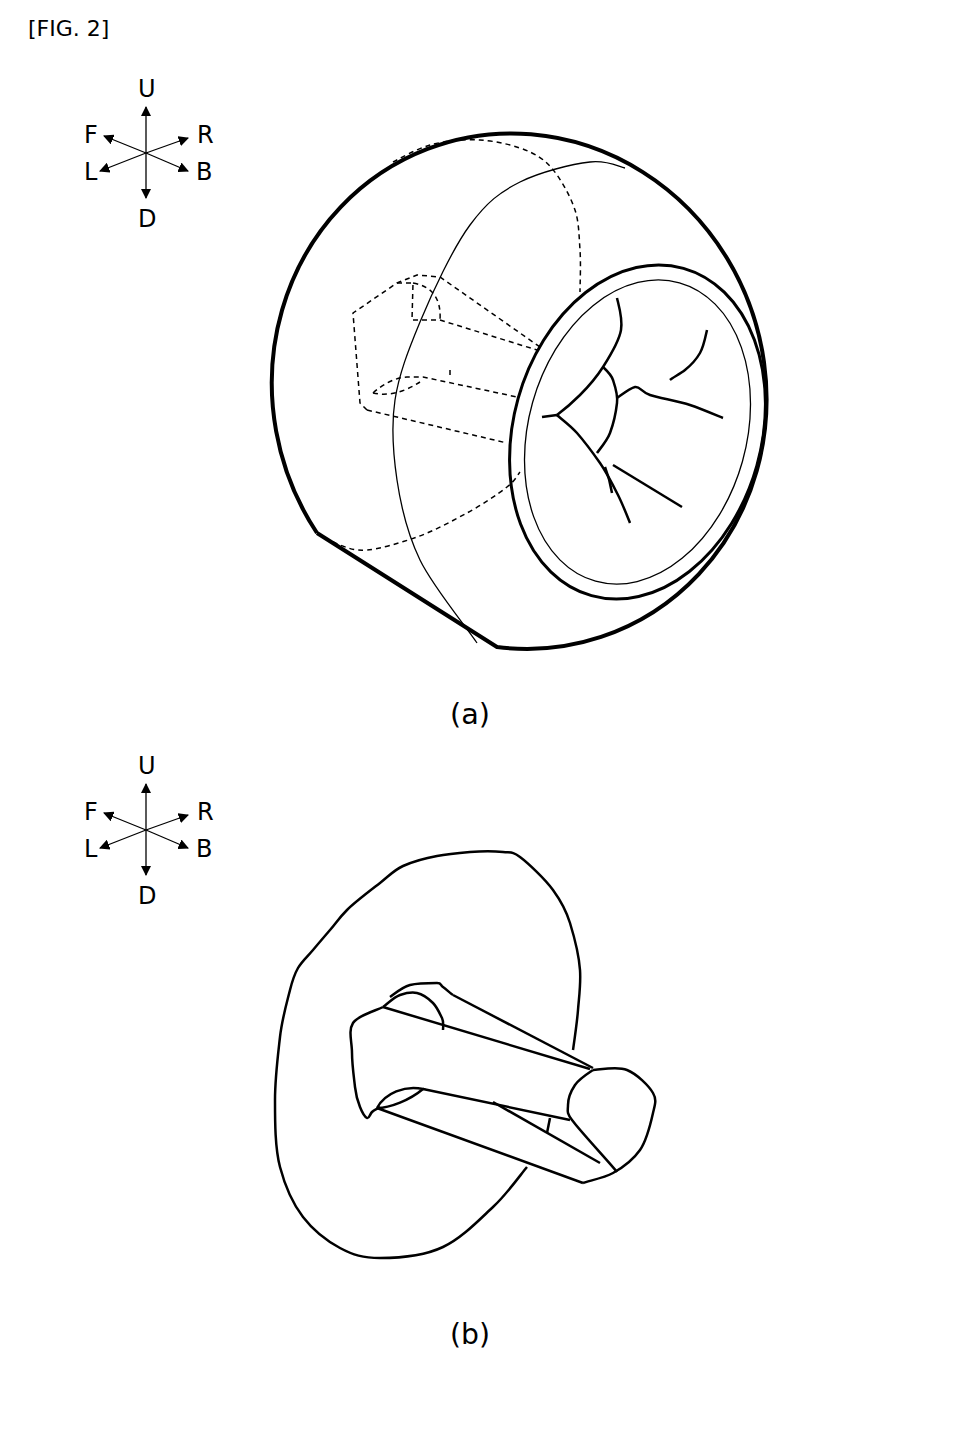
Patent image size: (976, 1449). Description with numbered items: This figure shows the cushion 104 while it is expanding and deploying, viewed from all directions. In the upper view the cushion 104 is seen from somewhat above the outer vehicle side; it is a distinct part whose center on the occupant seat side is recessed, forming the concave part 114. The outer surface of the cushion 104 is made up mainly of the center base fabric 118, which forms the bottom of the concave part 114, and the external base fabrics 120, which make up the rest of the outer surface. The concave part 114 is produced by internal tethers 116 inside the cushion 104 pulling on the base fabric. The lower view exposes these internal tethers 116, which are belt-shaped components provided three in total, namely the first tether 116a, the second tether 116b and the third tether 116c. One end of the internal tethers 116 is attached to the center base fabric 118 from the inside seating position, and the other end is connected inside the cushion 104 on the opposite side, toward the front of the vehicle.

The cushion 104 is at (340, 143).
The external base fabrics 120 is at (623, 173).
The concave part 114 is at (703, 473).
The center base fabric 118 is at (602, 417).
The internal tethers 116 is at (450, 377).
The first tether 116a is at (407, 1073).
The second tether 116b is at (490, 1012).
The third tether 116c is at (445, 1125).